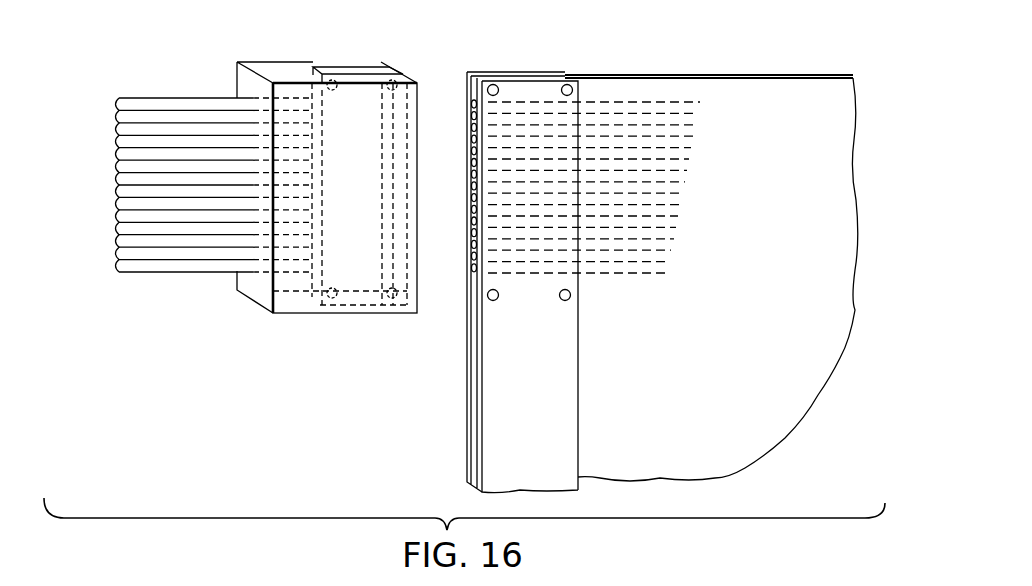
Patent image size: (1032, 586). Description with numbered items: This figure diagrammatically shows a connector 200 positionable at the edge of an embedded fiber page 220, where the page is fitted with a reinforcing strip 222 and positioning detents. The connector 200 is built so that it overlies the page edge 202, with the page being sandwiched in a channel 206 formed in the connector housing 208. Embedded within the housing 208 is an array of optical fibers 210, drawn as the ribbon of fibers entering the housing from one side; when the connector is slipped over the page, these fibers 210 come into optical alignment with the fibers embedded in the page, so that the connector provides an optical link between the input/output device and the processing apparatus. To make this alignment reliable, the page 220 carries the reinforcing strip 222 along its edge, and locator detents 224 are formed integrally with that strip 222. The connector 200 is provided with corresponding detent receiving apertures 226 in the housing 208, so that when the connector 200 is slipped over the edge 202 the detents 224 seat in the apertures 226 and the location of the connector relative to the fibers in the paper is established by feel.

The connector 200 is at (228, 56).
The page edge 202 is at (470, 438).
The channel 206 is at (353, 68).
The connector housing 208 is at (293, 66).
The array of optical fibers 210 is at (100, 97).
The page 220 is at (757, 192).
The reinforcing strip 222 is at (560, 367).
The locator detents 224 is at (563, 85).
The detent receiving apertures 226 is at (334, 90).